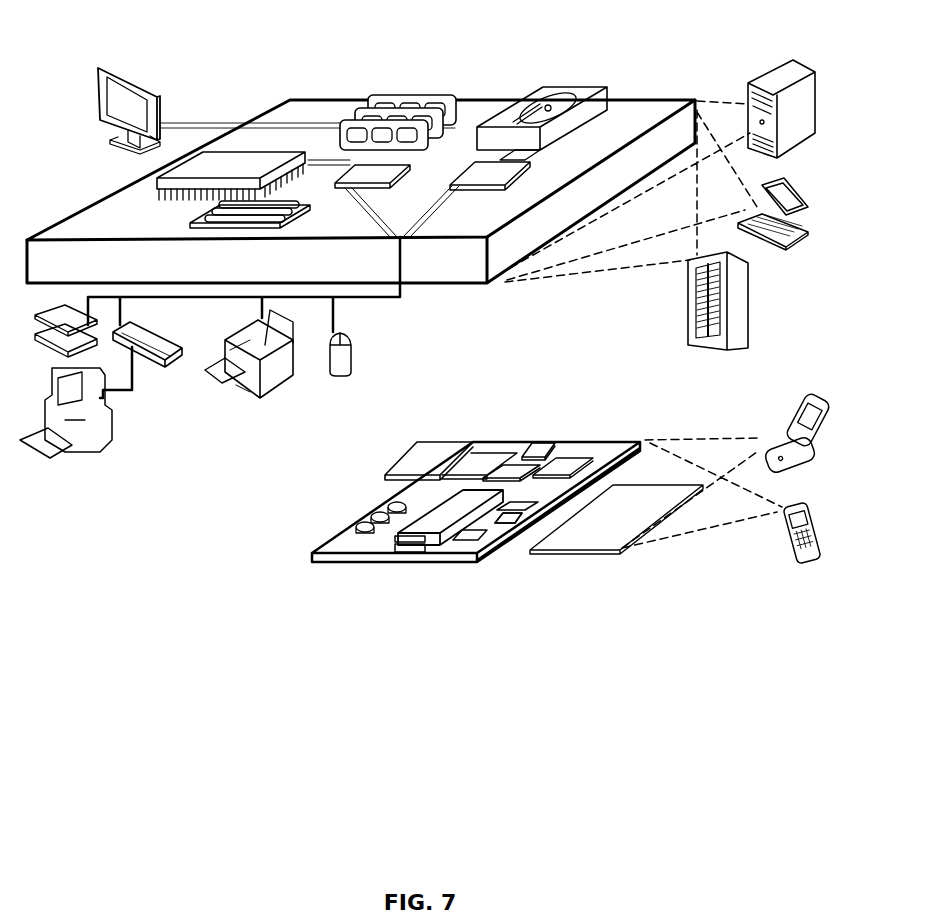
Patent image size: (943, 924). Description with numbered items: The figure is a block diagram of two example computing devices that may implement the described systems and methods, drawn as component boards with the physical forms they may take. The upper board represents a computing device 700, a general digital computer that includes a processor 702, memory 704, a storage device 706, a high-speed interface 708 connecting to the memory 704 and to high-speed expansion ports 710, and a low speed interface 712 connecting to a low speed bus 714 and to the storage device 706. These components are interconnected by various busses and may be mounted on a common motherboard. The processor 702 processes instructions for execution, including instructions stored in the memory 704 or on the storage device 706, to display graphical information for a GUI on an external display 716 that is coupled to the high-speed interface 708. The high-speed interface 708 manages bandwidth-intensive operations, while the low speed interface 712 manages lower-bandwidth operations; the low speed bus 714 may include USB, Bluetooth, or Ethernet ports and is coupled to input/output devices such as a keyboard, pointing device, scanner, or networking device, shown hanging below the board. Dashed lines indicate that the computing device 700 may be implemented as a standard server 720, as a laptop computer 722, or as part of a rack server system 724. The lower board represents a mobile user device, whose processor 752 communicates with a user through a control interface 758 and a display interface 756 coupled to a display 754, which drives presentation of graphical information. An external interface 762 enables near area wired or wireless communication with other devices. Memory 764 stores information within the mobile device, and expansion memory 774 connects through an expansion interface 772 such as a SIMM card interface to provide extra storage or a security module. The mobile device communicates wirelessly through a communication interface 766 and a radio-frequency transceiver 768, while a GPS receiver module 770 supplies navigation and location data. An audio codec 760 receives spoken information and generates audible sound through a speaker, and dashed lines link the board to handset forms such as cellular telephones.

The computing device 700 is at (240, 80).
The processor 702 is at (150, 185).
The memory 704 is at (381, 96).
The storage device 706 is at (537, 96).
The high-speed interface 708 is at (338, 177).
The high-speed expansion ports 710 is at (200, 216).
The low speed interface 712 is at (487, 162).
The low speed bus 714 is at (403, 237).
The display 716 is at (100, 74).
The standard server 720 is at (749, 90).
The laptop computer 722 is at (767, 185).
The rack server system 724 is at (689, 316).
The processor 752 is at (425, 544).
The display 754 is at (618, 552).
The display interface 756 is at (482, 558).
The control interface 758 is at (512, 544).
The audio codec 760 is at (463, 424).
The external interface 762 is at (410, 550).
The memory 764 is at (372, 517).
The communication interface 766 is at (512, 464).
The transceiver 768 is at (570, 460).
The GPS receiver module 770 is at (538, 444).
The expansion interface 772 is at (459, 454).
The expansion memory 774 is at (413, 454).